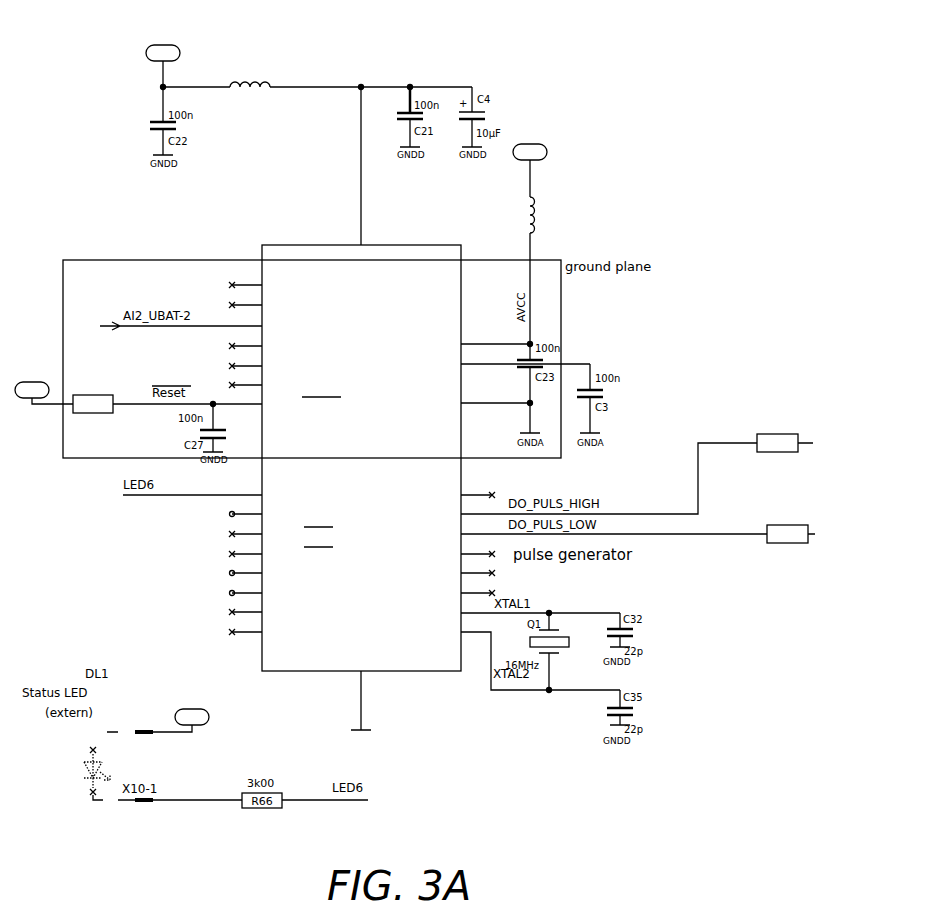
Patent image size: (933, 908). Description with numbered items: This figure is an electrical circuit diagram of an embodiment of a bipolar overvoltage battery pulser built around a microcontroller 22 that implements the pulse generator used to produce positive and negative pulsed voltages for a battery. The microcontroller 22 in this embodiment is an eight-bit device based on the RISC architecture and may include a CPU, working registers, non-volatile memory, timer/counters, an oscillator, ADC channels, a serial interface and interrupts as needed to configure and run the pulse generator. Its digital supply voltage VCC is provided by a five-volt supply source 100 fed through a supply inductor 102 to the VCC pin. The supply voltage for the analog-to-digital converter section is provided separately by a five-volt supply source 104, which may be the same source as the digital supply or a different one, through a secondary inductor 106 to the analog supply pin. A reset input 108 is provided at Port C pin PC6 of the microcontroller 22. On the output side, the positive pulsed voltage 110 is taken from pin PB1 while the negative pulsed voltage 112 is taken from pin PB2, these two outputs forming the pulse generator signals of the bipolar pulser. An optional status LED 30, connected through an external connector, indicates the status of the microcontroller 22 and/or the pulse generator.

The 5-volt supply source 100 is at (145, 51).
The supply inductor 102 is at (266, 84).
The 5-volt supply source 104 is at (548, 151).
The secondary inductor 106 is at (540, 214).
The reset input 108 is at (88, 395).
The positive pulsed voltage 110 is at (708, 443).
The negative pulsed voltage 112 is at (715, 536).
The microcontroller 22 is at (300, 243).
The status LED 30 is at (143, 737).